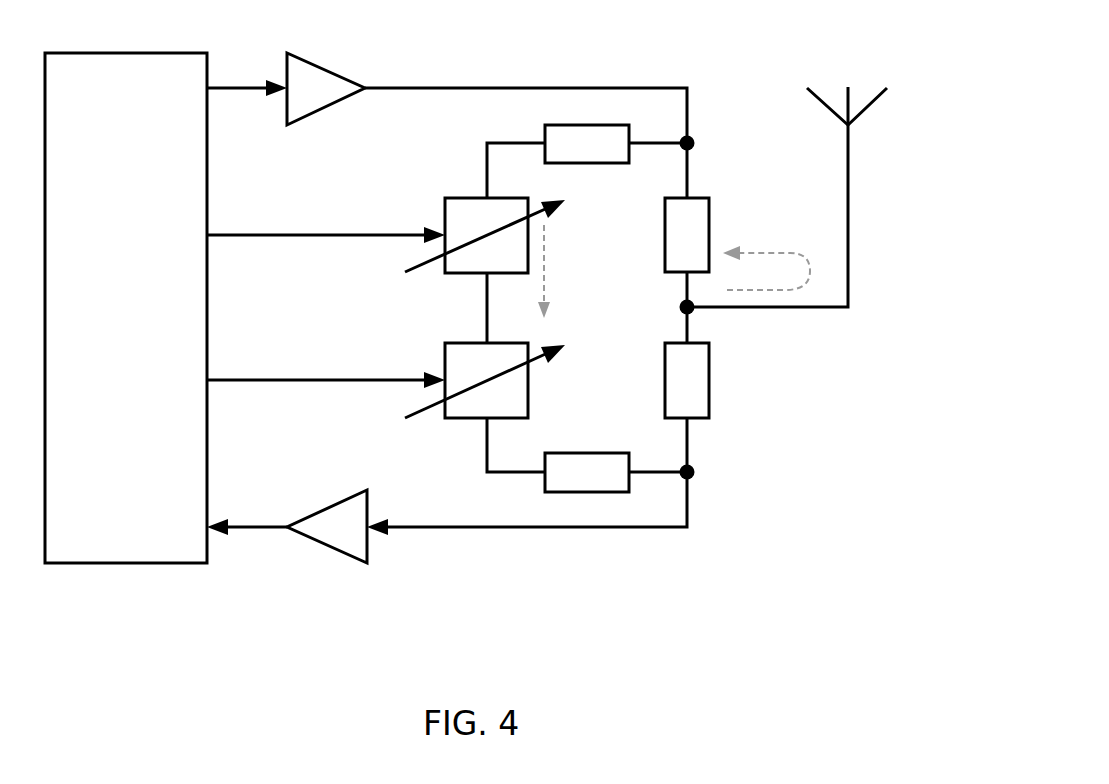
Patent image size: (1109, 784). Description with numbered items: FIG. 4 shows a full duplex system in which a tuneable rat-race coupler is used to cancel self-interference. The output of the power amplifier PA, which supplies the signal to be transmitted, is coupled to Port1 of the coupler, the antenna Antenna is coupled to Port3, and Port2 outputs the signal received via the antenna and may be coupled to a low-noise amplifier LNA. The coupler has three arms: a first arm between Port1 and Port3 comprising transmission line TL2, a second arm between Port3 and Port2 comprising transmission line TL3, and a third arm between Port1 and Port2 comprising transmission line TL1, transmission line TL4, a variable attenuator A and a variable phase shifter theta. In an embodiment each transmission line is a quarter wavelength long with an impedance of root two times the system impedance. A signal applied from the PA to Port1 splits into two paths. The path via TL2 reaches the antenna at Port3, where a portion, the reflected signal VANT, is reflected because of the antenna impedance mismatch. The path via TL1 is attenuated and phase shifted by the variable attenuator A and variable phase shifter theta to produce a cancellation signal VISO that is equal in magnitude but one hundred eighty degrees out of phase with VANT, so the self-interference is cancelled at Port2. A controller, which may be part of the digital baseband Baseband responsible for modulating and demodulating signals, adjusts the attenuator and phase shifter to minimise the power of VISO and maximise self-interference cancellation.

The digital base band and controller Baseband is at (126, 308).
The power amplifier PA is at (286, 72).
The low-noise amplifier LNA is at (447, 517).
The transmission line TL1 is at (587, 161).
The transmission line TL2 is at (687, 270).
The transmission line TL3 is at (687, 407).
The transmission line TL4 is at (587, 455).
The variable phase shifter theta is at (386, 235).
The variable attenuator A is at (386, 380).
The Port 1 Port1 is at (731, 122).
The Port 2 Port2 is at (727, 494).
The Port 3 Port3 is at (731, 321).
The antenna Antenna is at (822, 197).
The cancellation signal VISO is at (568, 271).
The reflected signal VANT is at (766, 248).